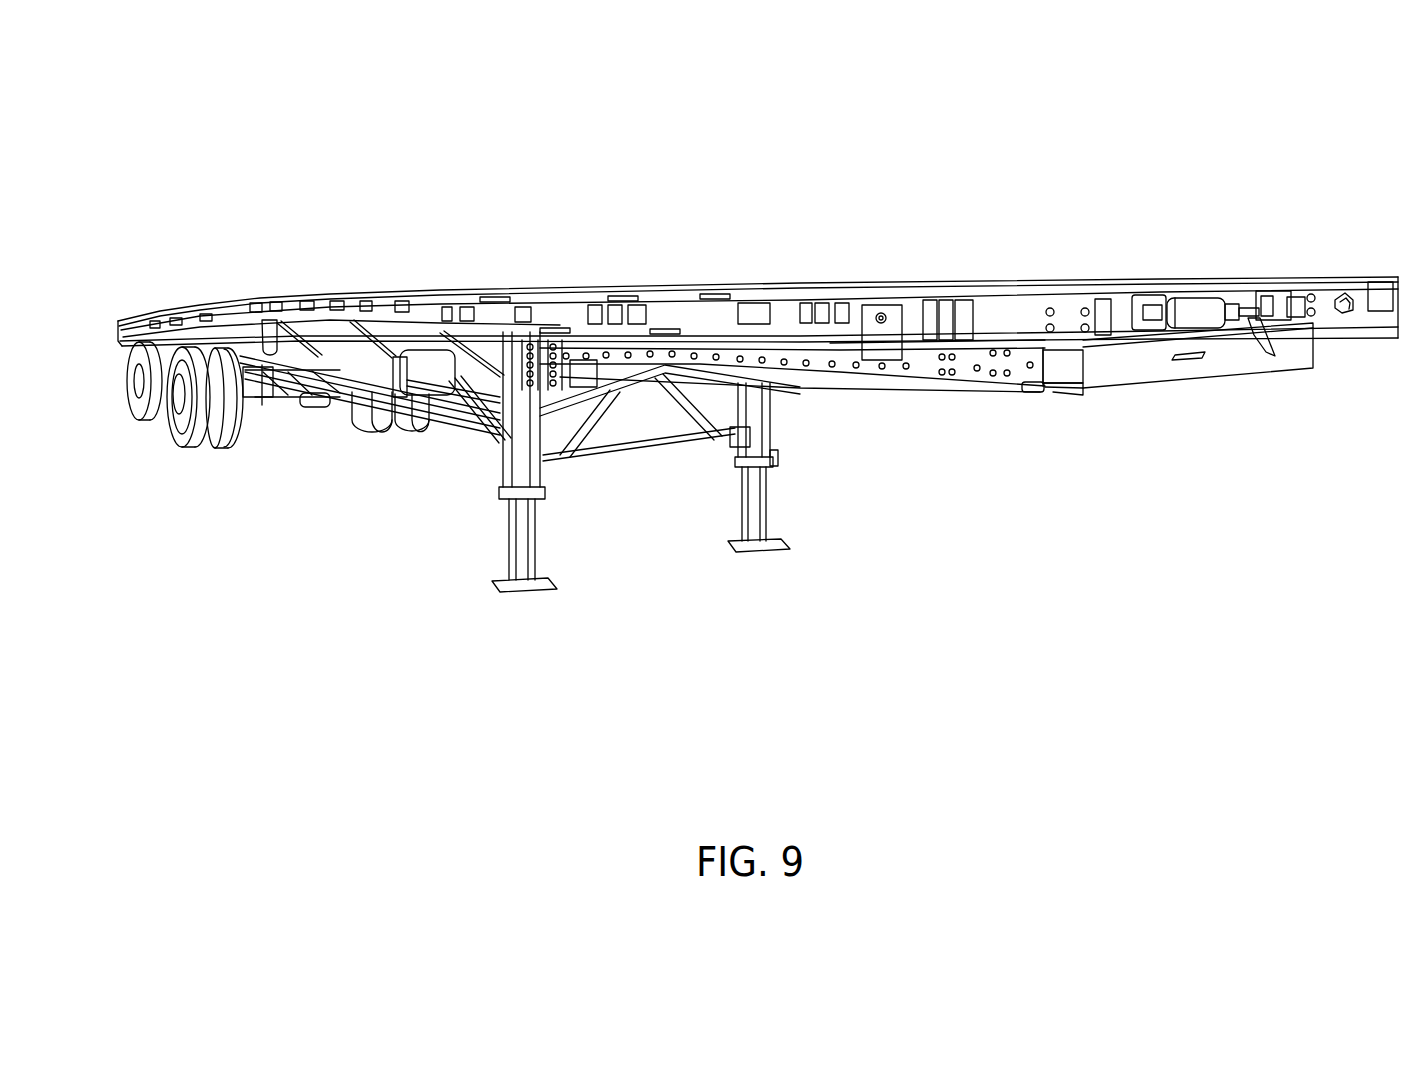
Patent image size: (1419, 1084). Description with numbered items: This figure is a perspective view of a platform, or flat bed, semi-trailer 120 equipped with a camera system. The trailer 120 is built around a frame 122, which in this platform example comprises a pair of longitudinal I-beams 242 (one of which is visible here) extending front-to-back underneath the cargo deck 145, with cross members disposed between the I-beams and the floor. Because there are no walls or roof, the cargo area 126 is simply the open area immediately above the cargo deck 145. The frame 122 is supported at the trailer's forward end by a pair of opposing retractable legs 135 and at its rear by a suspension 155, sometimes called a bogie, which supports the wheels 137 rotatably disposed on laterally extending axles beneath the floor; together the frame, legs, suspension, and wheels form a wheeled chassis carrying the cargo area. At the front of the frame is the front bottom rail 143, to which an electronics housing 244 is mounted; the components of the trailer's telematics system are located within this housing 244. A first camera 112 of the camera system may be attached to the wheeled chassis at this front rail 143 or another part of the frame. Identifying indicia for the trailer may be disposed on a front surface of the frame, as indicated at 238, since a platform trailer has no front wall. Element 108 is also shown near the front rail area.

The trailer 120 is at (520, 200).
The cargo area 126 is at (392, 228).
The cargo deck 145 is at (950, 292).
The electronics housing 244 is at (1133, 308).
The first camera 112 is at (1153, 308).
The connector assembly 108 is at (1297, 295).
The front bottom rail 143 is at (1325, 318).
The front surface of the frame 238 is at (1310, 352).
The frame 122 is at (1028, 418).
The longitudinal I-beams 242 is at (916, 388).
The retractable legs 135 is at (503, 526).
The suspension 155 is at (291, 410).
The wheels 137 is at (170, 440).